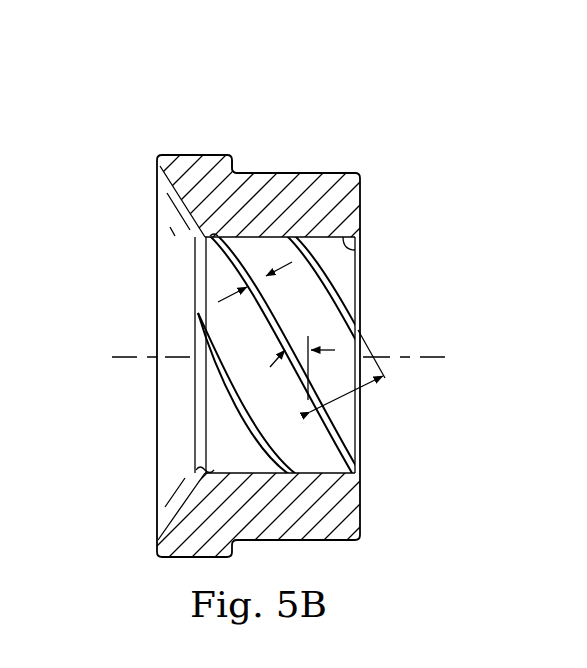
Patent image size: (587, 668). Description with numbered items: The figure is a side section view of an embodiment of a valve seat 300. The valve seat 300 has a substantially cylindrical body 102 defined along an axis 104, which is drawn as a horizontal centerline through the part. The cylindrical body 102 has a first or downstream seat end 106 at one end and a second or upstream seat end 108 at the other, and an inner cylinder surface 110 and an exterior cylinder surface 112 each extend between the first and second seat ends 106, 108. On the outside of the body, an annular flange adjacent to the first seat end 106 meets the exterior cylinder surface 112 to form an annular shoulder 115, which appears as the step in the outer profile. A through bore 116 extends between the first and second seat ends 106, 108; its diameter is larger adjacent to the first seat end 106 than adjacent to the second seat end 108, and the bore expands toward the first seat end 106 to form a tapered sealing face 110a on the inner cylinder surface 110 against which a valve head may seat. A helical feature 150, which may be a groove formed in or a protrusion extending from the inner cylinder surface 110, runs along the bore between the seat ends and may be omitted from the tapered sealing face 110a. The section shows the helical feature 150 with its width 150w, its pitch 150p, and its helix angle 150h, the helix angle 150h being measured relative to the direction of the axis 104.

The valve seat 300 is at (200, 76).
The cylindrical body 102 is at (352, 195).
The axis 104 is at (122, 353).
The first seat end 106 is at (157, 545).
The second seat end 108 is at (362, 503).
The inner cylinder surface 110 is at (344, 250).
The tapered sealing face 110a is at (165, 191).
The exterior cylinder surface 112 is at (327, 172).
The annular shoulder 115 is at (240, 166).
The through bore 116 is at (232, 460).
The helical feature 150 is at (228, 413).
The width 150w is at (220, 298).
The helix angle 150h is at (338, 350).
The pitch 150p is at (336, 402).